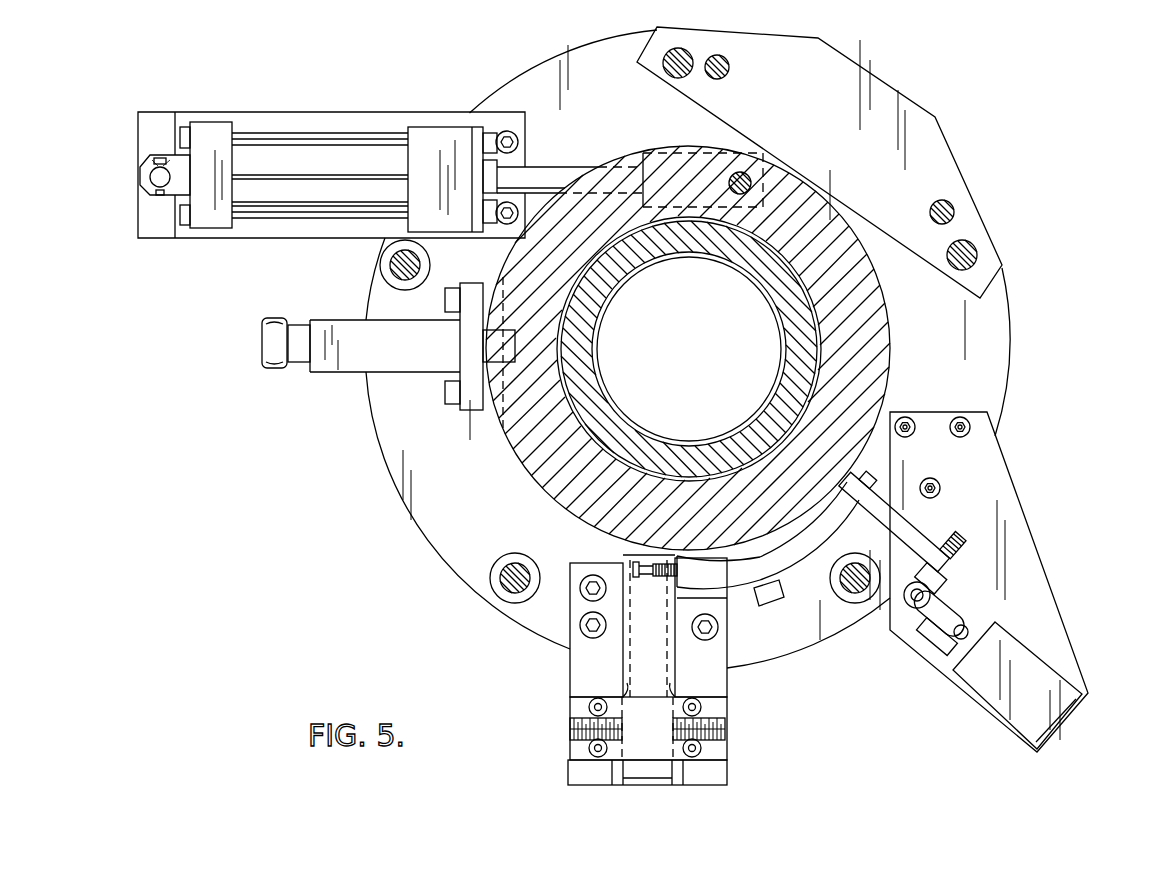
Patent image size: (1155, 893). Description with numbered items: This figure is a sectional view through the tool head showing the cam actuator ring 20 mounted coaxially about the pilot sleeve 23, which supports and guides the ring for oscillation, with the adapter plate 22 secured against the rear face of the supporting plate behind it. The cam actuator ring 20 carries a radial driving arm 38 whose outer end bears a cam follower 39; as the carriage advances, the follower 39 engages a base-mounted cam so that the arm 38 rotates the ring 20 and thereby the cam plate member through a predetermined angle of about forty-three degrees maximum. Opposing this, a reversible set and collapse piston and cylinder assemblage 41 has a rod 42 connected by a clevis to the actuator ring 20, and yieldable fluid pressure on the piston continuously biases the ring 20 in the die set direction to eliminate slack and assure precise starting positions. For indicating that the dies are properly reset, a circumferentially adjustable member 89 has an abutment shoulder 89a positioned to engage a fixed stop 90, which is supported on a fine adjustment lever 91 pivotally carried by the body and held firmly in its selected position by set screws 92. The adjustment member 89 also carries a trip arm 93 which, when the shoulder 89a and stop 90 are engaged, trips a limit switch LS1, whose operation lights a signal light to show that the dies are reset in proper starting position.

The cam actuator ring 20 is at (783, 192).
The adapter plate 22 is at (457, 553).
The pilot sleeve 23 is at (571, 330).
The radial driving arm 38 is at (347, 365).
The cam follower 39 is at (275, 370).
The piston and cylinder assemblage 41 is at (258, 135).
The rod 42 is at (533, 175).
The circumferentially adjustable member 89 is at (797, 575).
The abutment shoulder 89a is at (707, 552).
The fixed stop 90 is at (660, 580).
The fine adjustment lever 91 is at (645, 773).
The set screws 92 is at (570, 712).
The trip arm 93 is at (917, 535).
The limit switch LS1 is at (1013, 730).